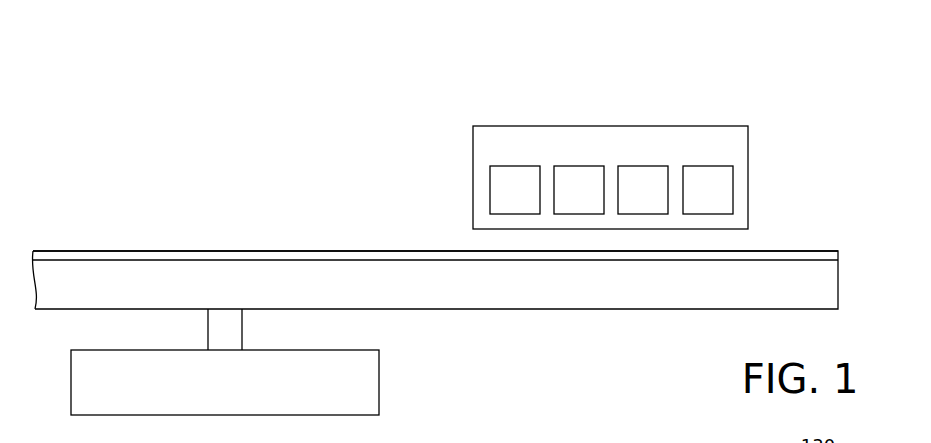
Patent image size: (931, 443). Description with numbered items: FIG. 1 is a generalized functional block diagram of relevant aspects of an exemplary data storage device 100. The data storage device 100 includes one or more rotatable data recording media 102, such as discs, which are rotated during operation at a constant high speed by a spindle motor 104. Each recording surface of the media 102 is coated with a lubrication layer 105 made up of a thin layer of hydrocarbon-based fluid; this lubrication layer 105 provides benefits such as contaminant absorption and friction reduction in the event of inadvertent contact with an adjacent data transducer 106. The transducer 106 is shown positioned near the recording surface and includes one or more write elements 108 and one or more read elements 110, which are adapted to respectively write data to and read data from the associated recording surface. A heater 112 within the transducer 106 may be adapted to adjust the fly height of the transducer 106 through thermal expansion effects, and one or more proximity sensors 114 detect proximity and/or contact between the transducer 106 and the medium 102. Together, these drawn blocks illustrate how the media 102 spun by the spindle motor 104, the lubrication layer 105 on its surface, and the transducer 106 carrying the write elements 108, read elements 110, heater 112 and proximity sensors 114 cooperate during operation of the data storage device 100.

The data storage device 100 is at (134, 105).
The rotatable data recording media 102 is at (288, 270).
The spindle motor 104 is at (379, 382).
The lubrication layer 105 is at (192, 252).
The data transducer 106 is at (748, 158).
The write element 108 is at (513, 166).
The read element 110 is at (578, 166).
The heater 112 is at (642, 166).
The proximity sensor 114 is at (707, 166).